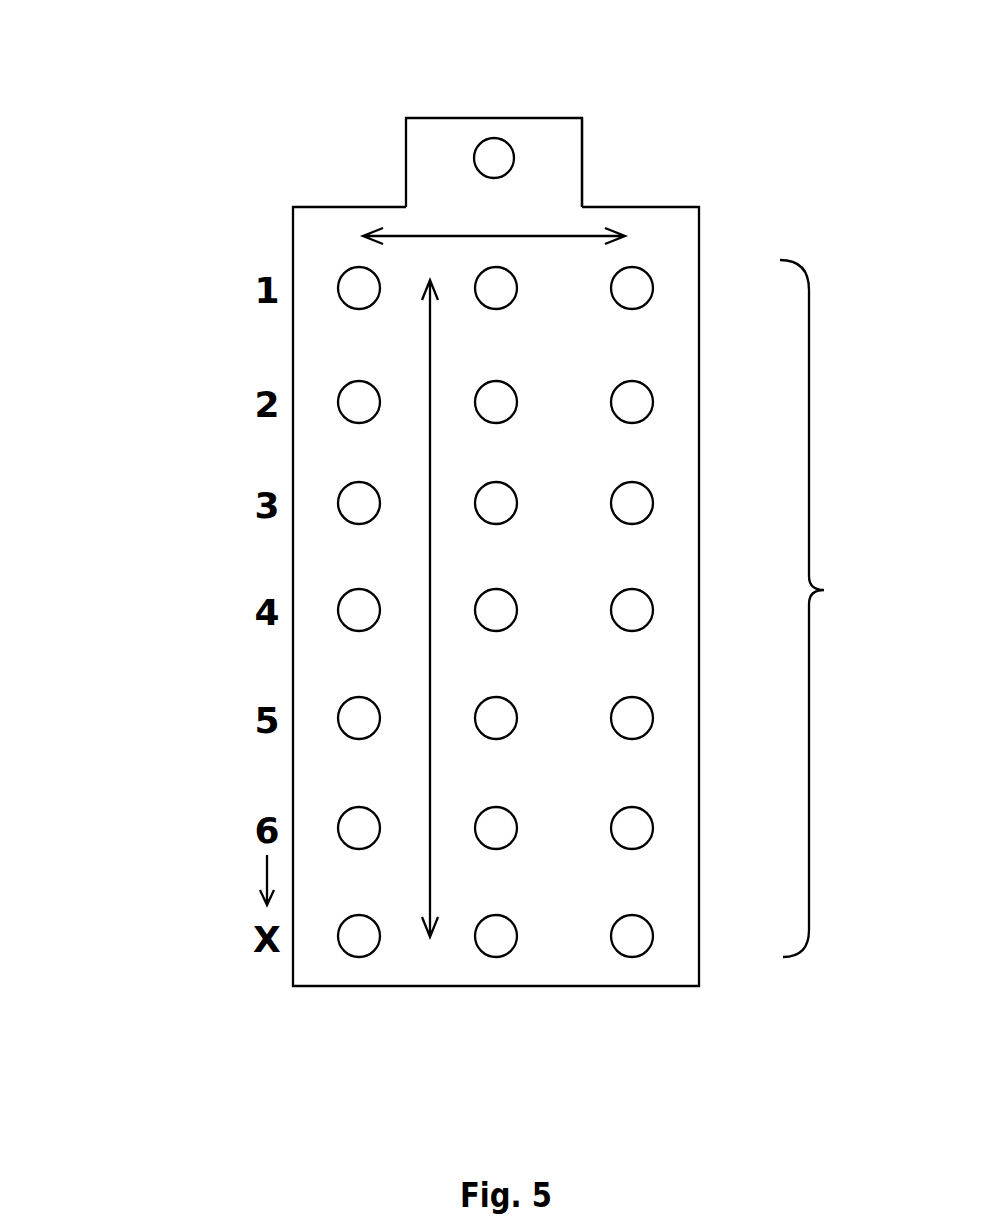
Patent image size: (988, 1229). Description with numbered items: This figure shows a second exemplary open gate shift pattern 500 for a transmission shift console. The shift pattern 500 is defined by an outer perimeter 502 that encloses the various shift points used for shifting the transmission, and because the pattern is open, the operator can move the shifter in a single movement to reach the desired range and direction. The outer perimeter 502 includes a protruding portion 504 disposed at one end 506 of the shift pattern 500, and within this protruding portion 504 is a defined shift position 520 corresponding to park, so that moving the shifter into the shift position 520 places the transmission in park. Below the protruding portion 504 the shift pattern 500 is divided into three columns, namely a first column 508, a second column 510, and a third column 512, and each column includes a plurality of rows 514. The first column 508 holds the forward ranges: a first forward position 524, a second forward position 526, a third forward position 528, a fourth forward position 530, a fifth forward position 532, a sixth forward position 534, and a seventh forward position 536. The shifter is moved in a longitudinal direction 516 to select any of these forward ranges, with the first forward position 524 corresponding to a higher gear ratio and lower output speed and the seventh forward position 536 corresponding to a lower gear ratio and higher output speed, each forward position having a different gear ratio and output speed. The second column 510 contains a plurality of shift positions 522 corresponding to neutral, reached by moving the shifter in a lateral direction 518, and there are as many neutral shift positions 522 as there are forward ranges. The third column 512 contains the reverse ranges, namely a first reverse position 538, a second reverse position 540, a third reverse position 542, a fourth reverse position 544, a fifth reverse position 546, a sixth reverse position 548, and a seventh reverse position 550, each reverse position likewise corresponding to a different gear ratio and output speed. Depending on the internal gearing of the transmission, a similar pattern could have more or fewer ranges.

The open gate shift pattern 500 is at (136, 108).
The outer perimeter 502 is at (312, 207).
The protruding portion 504 is at (406, 143).
The end of the shift pattern 506 is at (604, 155).
The first column 508 is at (352, 1015).
The second column 510 is at (493, 1012).
The third column 512 is at (646, 1002).
The rows 514 is at (828, 608).
The longitudinal direction 516 is at (430, 375).
The lateral direction 518 is at (541, 236).
The shift position 520 is at (494, 157).
The shift positions 522 is at (504, 294).
The first forward position 524 is at (350, 283).
The second forward position 526 is at (350, 397).
The third forward position 528 is at (350, 498).
The fourth forward position 530 is at (350, 605).
The fifth forward position 532 is at (350, 713).
The sixth forward position 534 is at (350, 823).
The seventh forward position 536 is at (348, 942).
The first reverse position 538 is at (641, 288).
The second reverse position 540 is at (641, 402).
The third reverse position 542 is at (641, 503).
The fourth reverse position 544 is at (641, 610).
The fifth reverse position 546 is at (641, 718).
The sixth reverse position 548 is at (641, 828).
The seventh reverse position 550 is at (641, 937).